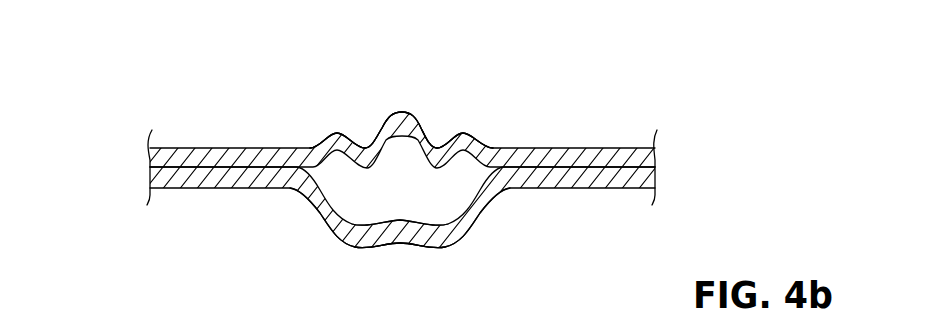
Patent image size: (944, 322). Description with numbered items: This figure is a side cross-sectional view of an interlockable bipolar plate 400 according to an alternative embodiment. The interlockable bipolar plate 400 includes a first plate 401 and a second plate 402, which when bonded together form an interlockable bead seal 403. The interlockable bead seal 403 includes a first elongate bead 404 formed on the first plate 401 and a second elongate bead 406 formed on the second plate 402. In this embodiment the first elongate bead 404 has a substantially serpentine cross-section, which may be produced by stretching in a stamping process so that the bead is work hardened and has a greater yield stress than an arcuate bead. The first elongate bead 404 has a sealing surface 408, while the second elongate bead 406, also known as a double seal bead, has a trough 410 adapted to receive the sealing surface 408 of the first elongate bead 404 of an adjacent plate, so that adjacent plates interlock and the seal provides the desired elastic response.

The interlockable bipolar plate 400 is at (150, 167).
The first plate 401 is at (658, 150).
The second plate 402 is at (658, 181).
The interlockable bead seal 403 is at (485, 110).
The first elongate bead 404 is at (382, 135).
The second elongate bead 406 is at (313, 208).
The sealing surface 408 is at (402, 104).
The trough 410 is at (402, 228).